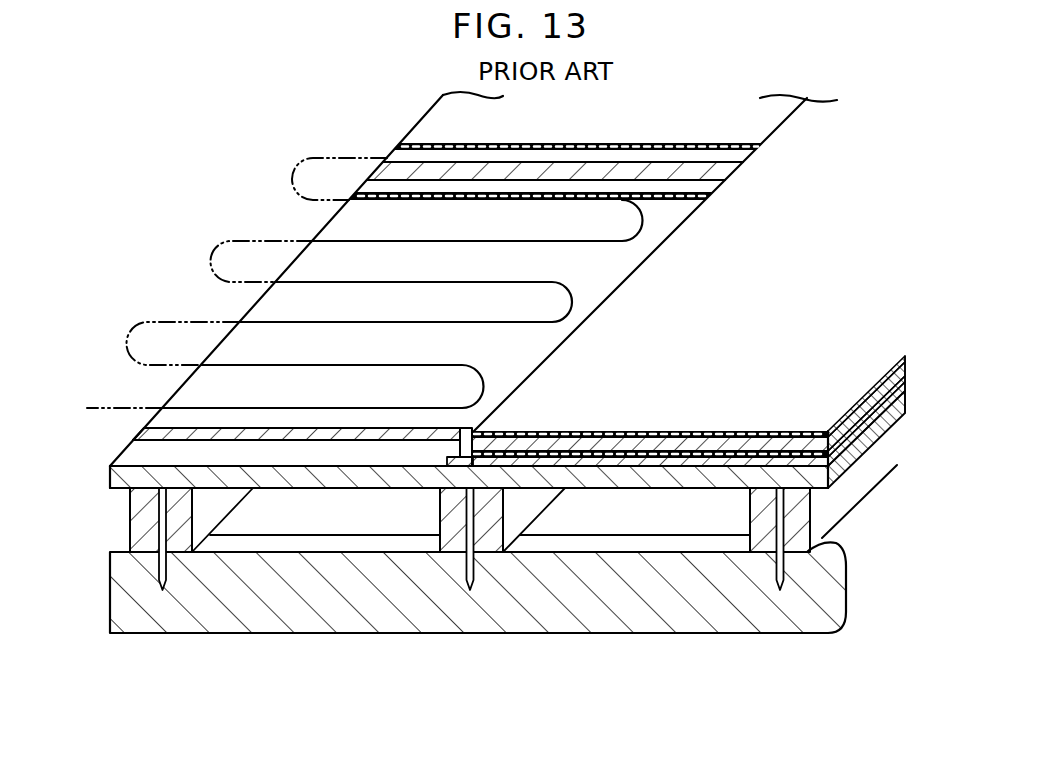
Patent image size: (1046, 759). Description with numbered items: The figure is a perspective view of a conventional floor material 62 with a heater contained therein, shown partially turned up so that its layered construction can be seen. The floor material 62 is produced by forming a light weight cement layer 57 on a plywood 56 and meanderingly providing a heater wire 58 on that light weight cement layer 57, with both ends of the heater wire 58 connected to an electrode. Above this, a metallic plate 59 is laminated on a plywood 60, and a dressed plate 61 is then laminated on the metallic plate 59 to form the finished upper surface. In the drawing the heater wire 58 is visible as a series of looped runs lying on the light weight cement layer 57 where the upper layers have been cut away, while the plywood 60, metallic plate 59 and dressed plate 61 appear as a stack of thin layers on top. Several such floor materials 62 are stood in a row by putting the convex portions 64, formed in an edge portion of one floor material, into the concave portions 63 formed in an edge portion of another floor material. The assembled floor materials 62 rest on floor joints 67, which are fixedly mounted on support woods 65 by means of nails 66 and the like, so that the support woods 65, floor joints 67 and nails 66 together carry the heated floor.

The plywood 56 is at (283, 486).
The light weight cement layer 57 is at (135, 433).
The heater wire 58 is at (553, 283).
The metallic plate 59 is at (683, 204).
The plywood 60 is at (665, 170).
The dressed plate 61 is at (421, 142).
The floor material with a heater contained therein 62 is at (105, 474).
The concave portions 63 is at (432, 490).
The convex portions 64 is at (463, 440).
The support woods 65 is at (371, 598).
The nails 66 is at (472, 597).
The floor joints 67 is at (123, 522).